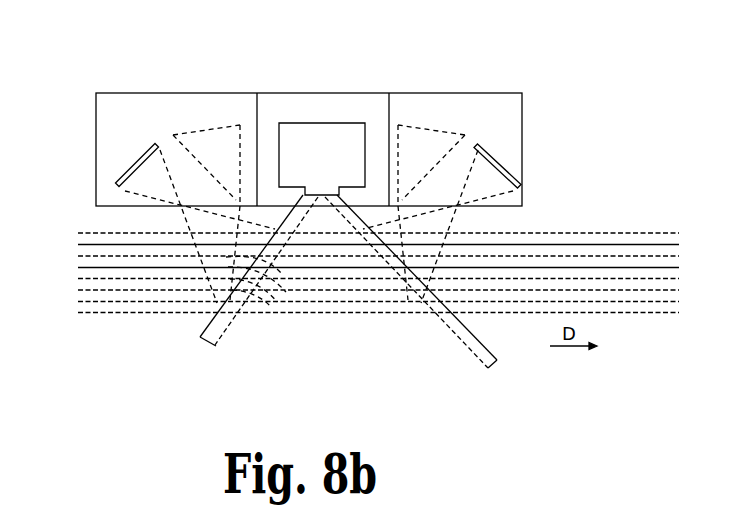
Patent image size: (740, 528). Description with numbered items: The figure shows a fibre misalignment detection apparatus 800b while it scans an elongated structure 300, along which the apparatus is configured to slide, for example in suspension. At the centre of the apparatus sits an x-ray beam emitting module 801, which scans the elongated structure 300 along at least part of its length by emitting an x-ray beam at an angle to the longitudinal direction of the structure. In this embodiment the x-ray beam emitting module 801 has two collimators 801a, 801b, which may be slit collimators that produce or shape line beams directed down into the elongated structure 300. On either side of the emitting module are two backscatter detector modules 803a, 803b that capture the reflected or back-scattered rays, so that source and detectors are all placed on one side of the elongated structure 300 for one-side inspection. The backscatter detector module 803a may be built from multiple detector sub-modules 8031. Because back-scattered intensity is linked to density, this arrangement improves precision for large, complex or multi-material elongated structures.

The fibre misalignment detection apparatus 800b is at (99, 75).
The x-ray beam emitting module 801 is at (318, 122).
The collimator 801a is at (318, 198).
The collimator 801b is at (326, 198).
The backscatter detector module 803a is at (137, 110).
The backscatter detector module 803b is at (465, 115).
The detector sub-module 8031 is at (210, 125).
The elongated structure 300 is at (616, 230).